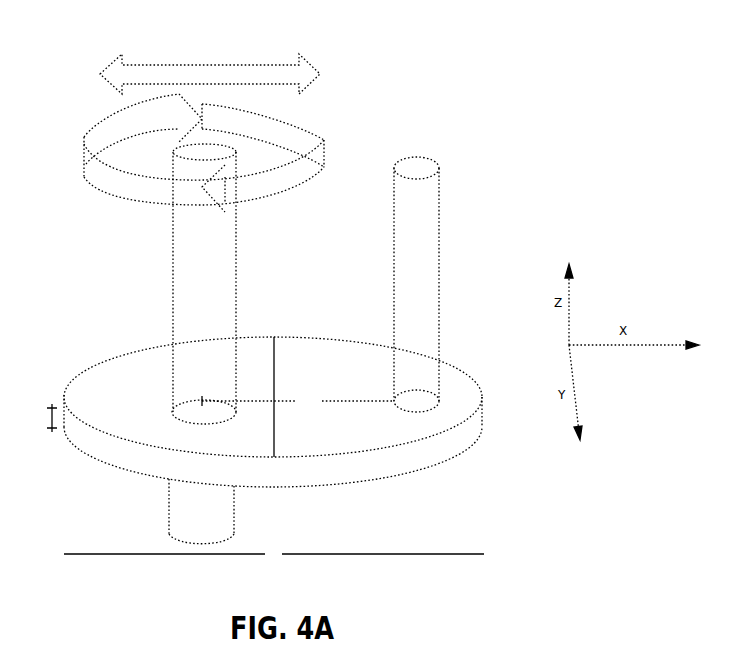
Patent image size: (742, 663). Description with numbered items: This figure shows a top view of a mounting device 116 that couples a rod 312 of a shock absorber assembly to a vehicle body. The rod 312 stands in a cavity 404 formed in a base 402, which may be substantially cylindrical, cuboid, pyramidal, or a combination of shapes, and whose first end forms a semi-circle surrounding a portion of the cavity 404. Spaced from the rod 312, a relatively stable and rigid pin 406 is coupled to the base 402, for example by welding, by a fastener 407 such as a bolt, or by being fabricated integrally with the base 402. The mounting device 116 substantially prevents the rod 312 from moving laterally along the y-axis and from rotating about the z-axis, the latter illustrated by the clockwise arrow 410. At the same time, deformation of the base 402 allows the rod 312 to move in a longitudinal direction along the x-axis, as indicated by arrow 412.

The mounting device 116 is at (522, 106).
The arrow 412 is at (140, 72).
The arrow 410 is at (308, 148).
The rod 312 is at (170, 285).
The cavity 404 is at (197, 403).
The pin 406 is at (413, 320).
The fastener 407 is at (435, 398).
The base 402 is at (300, 337).